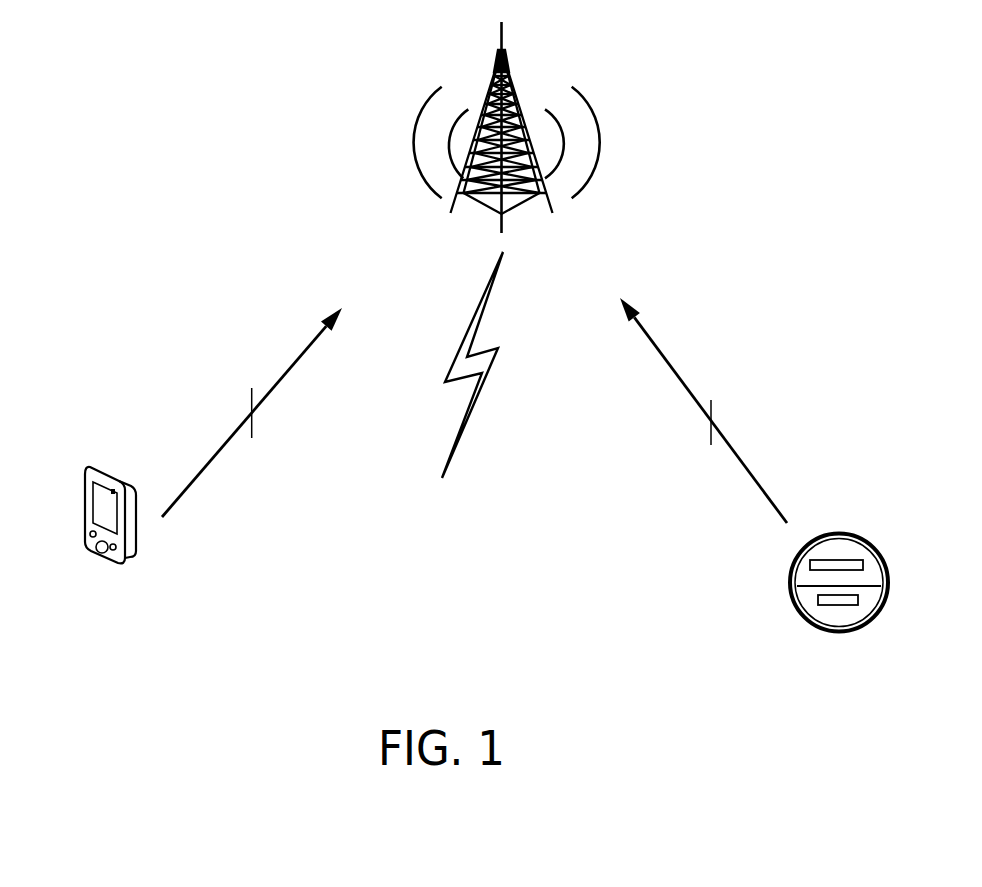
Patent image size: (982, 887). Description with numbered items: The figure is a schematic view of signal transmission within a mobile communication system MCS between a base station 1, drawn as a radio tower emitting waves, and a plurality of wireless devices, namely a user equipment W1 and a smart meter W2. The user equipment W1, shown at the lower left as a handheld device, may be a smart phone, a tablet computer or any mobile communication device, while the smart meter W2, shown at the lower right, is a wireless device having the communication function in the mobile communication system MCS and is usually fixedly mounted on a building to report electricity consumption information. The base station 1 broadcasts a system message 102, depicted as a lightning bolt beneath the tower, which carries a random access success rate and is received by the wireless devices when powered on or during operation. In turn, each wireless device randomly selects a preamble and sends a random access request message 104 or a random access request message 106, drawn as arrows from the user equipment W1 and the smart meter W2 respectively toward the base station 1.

The base station 1 is at (515, 95).
The mobile communication system MCS is at (312, 88).
The system message 102 is at (498, 363).
The random access request message 104 is at (250, 412).
The random access request message 106 is at (716, 424).
The user equipment W1 is at (83, 510).
The smart meter W2 is at (791, 608).